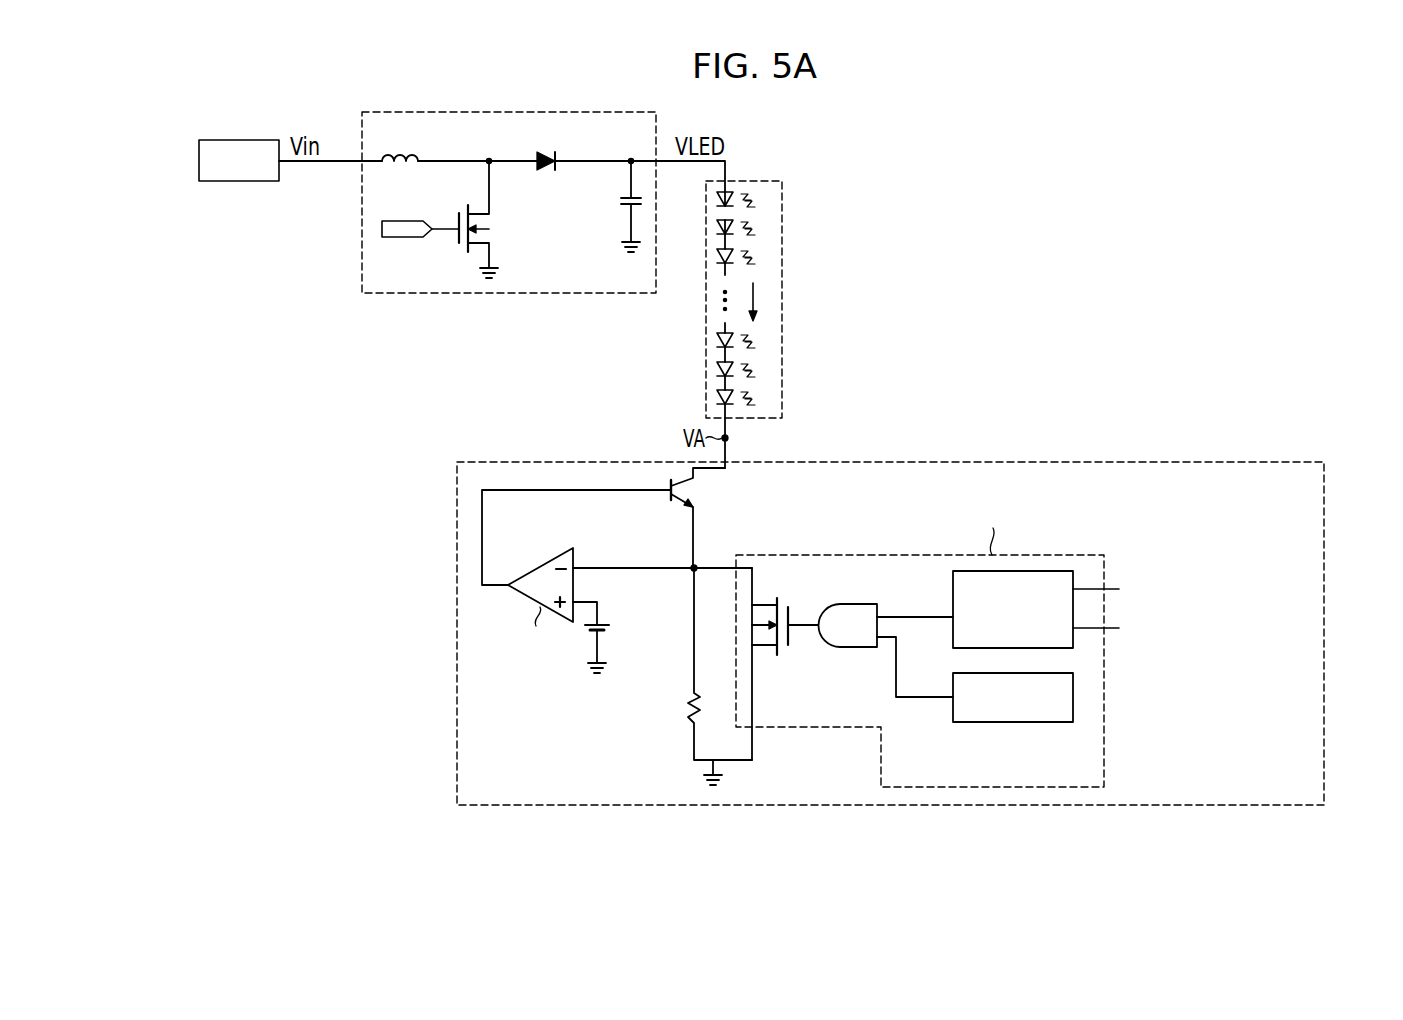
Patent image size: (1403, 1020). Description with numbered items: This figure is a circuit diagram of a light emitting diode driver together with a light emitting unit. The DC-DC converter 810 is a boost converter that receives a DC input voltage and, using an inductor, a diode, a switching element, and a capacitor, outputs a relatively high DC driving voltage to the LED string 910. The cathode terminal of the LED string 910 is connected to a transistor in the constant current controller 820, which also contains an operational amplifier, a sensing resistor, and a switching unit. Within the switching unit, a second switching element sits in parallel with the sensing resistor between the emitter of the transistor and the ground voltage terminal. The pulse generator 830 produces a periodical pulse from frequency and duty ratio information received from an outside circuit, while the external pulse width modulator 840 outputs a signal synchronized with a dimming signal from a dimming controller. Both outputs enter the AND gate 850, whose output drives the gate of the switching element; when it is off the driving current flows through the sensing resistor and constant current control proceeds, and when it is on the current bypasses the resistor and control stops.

The DC-DC converter 810 is at (397, 293).
The constant current controller 820 is at (1068, 462).
The pulse generator 830 is at (952, 589).
The external pulse width modulator 840 is at (983, 722).
The AND gate 850 is at (857, 647).
The LED string 910 is at (782, 202).